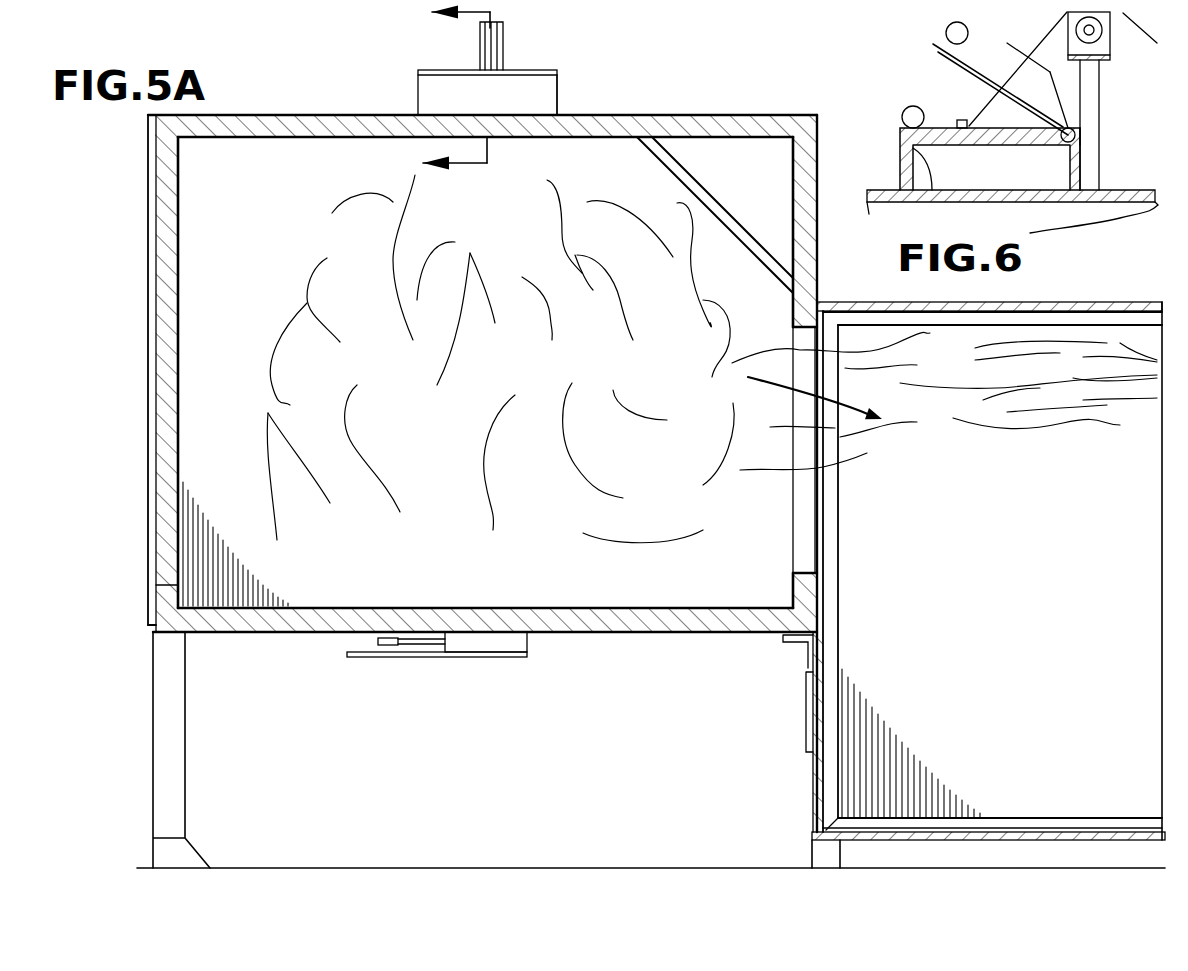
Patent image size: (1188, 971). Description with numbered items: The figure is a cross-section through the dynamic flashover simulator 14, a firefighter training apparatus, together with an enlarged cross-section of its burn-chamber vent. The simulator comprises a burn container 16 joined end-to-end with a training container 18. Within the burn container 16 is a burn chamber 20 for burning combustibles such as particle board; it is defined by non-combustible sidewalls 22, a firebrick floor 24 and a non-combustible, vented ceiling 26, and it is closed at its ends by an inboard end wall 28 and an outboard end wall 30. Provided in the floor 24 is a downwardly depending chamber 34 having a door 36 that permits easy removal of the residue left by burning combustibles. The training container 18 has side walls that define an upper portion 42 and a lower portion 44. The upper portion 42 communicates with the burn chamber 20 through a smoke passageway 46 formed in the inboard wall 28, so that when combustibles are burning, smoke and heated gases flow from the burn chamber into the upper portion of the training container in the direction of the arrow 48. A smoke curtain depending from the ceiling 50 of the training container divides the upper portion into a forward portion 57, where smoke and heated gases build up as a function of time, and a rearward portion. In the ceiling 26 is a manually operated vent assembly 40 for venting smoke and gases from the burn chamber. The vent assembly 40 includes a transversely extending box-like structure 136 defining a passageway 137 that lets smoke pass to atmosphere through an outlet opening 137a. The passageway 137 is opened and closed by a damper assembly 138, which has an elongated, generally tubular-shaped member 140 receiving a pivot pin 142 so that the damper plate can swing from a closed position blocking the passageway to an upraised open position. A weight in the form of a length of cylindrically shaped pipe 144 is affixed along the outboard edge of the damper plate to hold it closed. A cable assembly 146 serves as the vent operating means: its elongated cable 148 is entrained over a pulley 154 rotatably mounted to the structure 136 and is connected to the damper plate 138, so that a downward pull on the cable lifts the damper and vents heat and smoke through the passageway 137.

In FIG. 5A, the dynamic flashover simulator 14 is at (502, 436).
In FIG. 5A, the burn container 16 is at (688, 106).
In FIG. 6, the burn container 16 is at (1114, 184).
In FIG. 5A, the training container 18 is at (925, 566).
In FIG. 5A, the burn chamber 20 is at (598, 359).
In FIG. 5A, the non-combustible sidewalls 22 is at (205, 512).
In FIG. 5A, the firebrick floor 24 is at (657, 630).
In FIG. 5A, the vented ceiling 26 is at (327, 133).
In FIG. 5A, the inboard end wall 28 is at (793, 168).
In FIG. 5A, the outboard end wall 30 is at (152, 378).
In FIG. 5A, the downwardly depending chamber 34 is at (494, 652).
In FIG. 5A, the door 36 is at (463, 657).
In FIG. 5A, the vent assembly 40 is at (502, 68).
In FIG. 6, the vent assembly 40 is at (1004, 125).
In FIG. 5A, the upper portion 42 is at (998, 389).
In FIG. 5A, the lower portion 44 is at (939, 743).
In FIG. 5A, the smoke passageway 46 is at (803, 572).
In FIG. 5A, the arrow 48 is at (773, 389).
In FIG. 5A, the ceiling 50 is at (955, 312).
In FIG. 5A, the forward portion 57 is at (1066, 405).
In FIG. 5A, the box-like structure 136 is at (558, 90).
In FIG. 6, the box-like structure 136 is at (900, 165).
In FIG. 6, the passageway 137 is at (987, 165).
In FIG. 6, the outlet opening 137a is at (939, 193).
In FIG. 6, the damper assembly 138 is at (1027, 115).
In FIG. 6, the tubular-shaped member 140 is at (1075, 128).
In FIG. 6, the pivot pin 142 is at (1078, 135).
In FIG. 5A, the pipe 144 is at (422, 70).
In FIG. 6, the pipe 144 is at (913, 115).
In FIG. 6, the cable assembly 146 is at (979, 98).
In FIG. 6, the cable 148 is at (1022, 48).
In FIG. 5A, the second pulley 154 is at (488, 40).
In FIG. 6, the second pulley 154 is at (1100, 35).